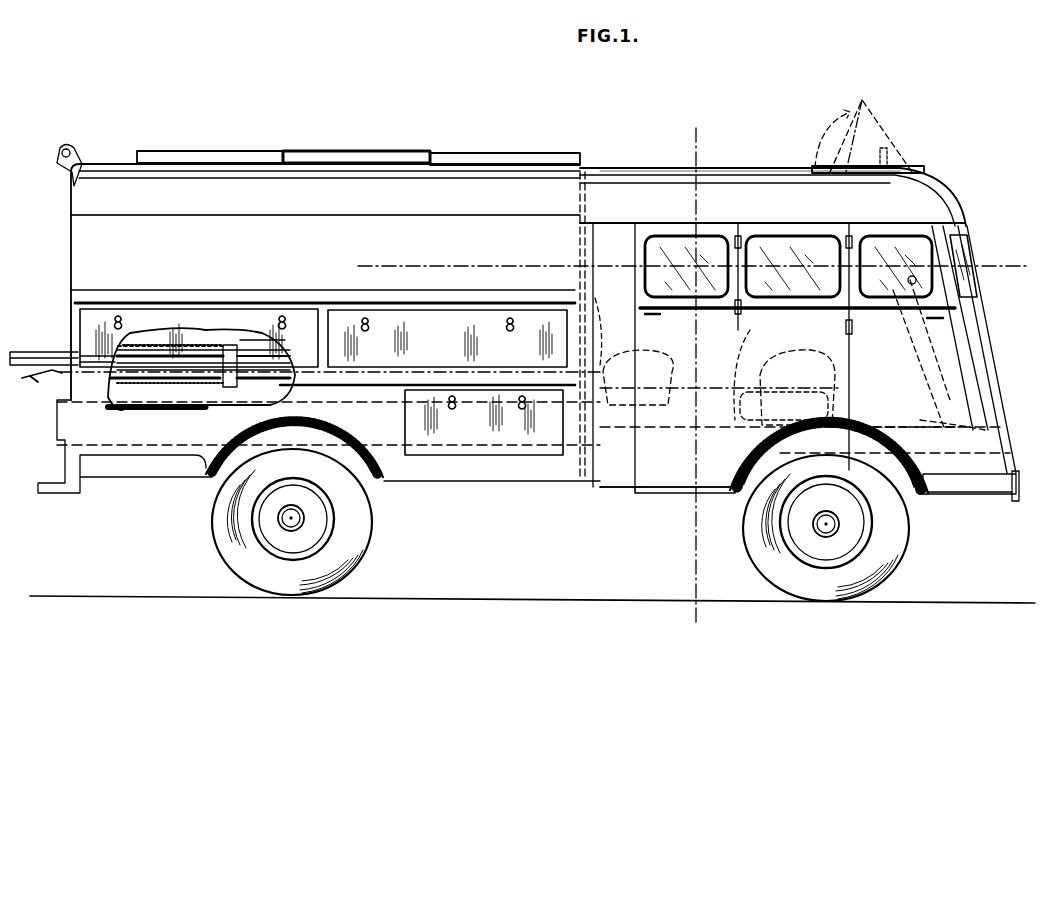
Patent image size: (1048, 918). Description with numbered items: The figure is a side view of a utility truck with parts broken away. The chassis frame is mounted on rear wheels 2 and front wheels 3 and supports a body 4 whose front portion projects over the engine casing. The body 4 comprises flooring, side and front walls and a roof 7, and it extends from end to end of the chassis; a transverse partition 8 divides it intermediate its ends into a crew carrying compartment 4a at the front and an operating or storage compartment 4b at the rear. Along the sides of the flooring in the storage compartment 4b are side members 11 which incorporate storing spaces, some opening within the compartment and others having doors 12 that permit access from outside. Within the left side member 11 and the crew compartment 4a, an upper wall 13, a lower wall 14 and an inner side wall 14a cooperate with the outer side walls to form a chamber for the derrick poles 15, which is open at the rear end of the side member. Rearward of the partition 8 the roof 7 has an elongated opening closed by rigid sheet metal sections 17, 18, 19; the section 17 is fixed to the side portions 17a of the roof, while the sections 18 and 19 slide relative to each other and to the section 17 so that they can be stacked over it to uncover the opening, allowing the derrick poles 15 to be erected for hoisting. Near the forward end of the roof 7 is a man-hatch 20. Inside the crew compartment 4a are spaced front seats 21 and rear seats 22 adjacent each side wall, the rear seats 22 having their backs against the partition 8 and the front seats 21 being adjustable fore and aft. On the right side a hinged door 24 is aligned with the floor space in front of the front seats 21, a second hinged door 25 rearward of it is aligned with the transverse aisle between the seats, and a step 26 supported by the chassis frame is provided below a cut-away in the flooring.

The rear wheels 2 is at (364, 546).
The front wheels 3 is at (898, 538).
The body 4 is at (1032, 283).
The crew carrying compartment 4a is at (766, 372).
The operating or storage compartment 4b is at (49, 337).
The roof 7 is at (755, 190).
The transverse partition 8 is at (587, 219).
The side members 11 is at (78, 244).
The doors 12 is at (110, 315).
The upper wall 13 is at (190, 345).
The lower wall 14 is at (150, 388).
The side wall 14a is at (222, 386).
The derrick poles 15 is at (133, 347).
The roof section 17 is at (507, 163).
The side portions of the roof 17a is at (183, 195).
The roof section 18 is at (365, 163).
The roof section 19 is at (246, 160).
The man-hatch 20 is at (826, 172).
The front seats 21 is at (812, 372).
The rear seats 22 is at (660, 362).
The hinged door 24 is at (938, 420).
The hinged door 25 is at (632, 474).
The step 26 is at (666, 492).